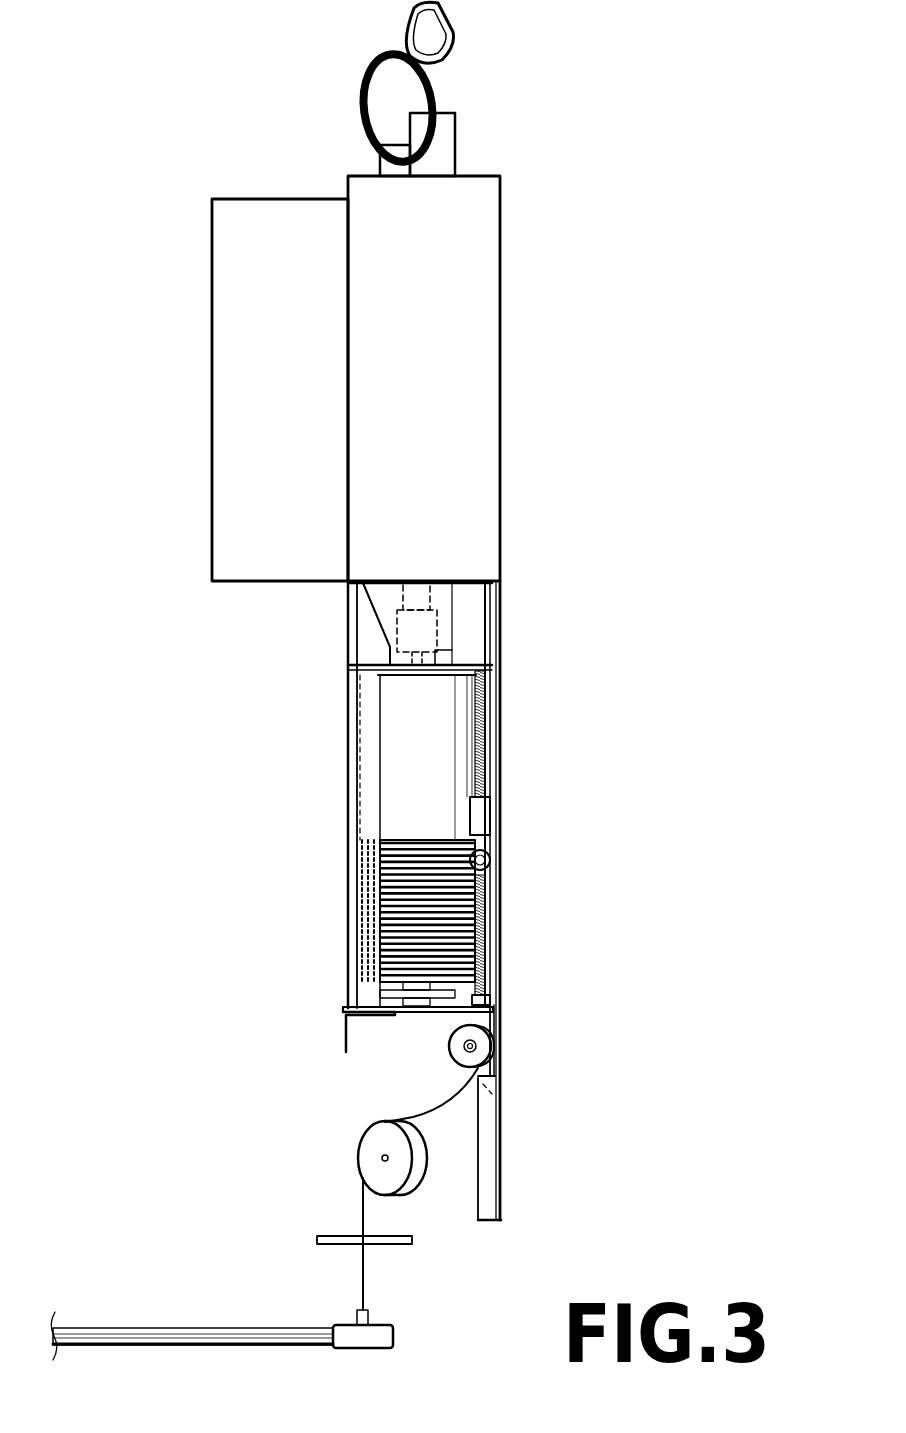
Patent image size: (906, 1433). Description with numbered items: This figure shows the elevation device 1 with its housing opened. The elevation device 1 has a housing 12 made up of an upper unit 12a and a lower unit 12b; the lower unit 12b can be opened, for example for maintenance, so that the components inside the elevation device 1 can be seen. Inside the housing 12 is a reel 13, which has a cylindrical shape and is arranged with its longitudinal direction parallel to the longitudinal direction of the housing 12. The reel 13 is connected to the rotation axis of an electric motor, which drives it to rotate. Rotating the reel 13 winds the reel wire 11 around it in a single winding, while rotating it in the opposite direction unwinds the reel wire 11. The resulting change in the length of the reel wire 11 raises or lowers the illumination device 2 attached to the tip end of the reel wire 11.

The elevation device 1 is at (387, 675).
The illumination device 2 is at (245, 1328).
The reel wire 11 is at (363, 1275).
The housing 12 is at (362, 378).
The upper unit 12a is at (500, 468).
The lower unit 12b is at (212, 393).
The reel 13 is at (455, 738).